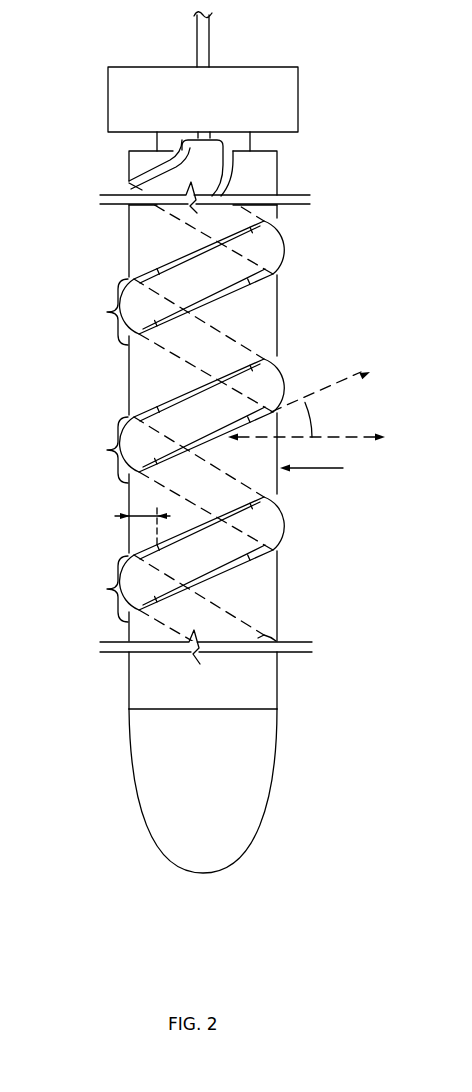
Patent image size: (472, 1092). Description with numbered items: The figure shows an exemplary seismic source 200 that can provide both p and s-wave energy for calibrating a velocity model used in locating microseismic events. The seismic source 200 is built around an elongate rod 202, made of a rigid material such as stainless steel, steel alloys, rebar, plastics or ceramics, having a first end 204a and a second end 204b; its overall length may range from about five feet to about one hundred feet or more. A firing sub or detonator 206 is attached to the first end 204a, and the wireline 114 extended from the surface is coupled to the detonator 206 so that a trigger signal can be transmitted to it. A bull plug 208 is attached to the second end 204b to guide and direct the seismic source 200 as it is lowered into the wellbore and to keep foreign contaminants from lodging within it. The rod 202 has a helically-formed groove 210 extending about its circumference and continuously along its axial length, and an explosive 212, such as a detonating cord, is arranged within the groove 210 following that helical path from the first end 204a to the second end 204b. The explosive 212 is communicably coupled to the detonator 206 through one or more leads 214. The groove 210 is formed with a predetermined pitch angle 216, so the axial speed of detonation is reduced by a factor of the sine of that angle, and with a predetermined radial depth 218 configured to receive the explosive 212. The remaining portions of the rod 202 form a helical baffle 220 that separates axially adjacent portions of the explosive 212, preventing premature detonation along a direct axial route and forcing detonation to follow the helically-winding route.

The seismic source 200 is at (347, 117).
The wireline 114 is at (210, 40).
The detonator 206 is at (108, 105).
The leads 214 is at (208, 136).
The first end 204a is at (273, 175).
The elongate rod 202 is at (277, 320).
The explosive 212 is at (128, 191).
The groove 210 is at (107, 312).
The pitch angle 216 is at (313, 423).
The baffle 220 is at (327, 468).
The radial depth 218 is at (140, 515).
The second end 204b is at (135, 681).
The bull plug 208 is at (258, 797).